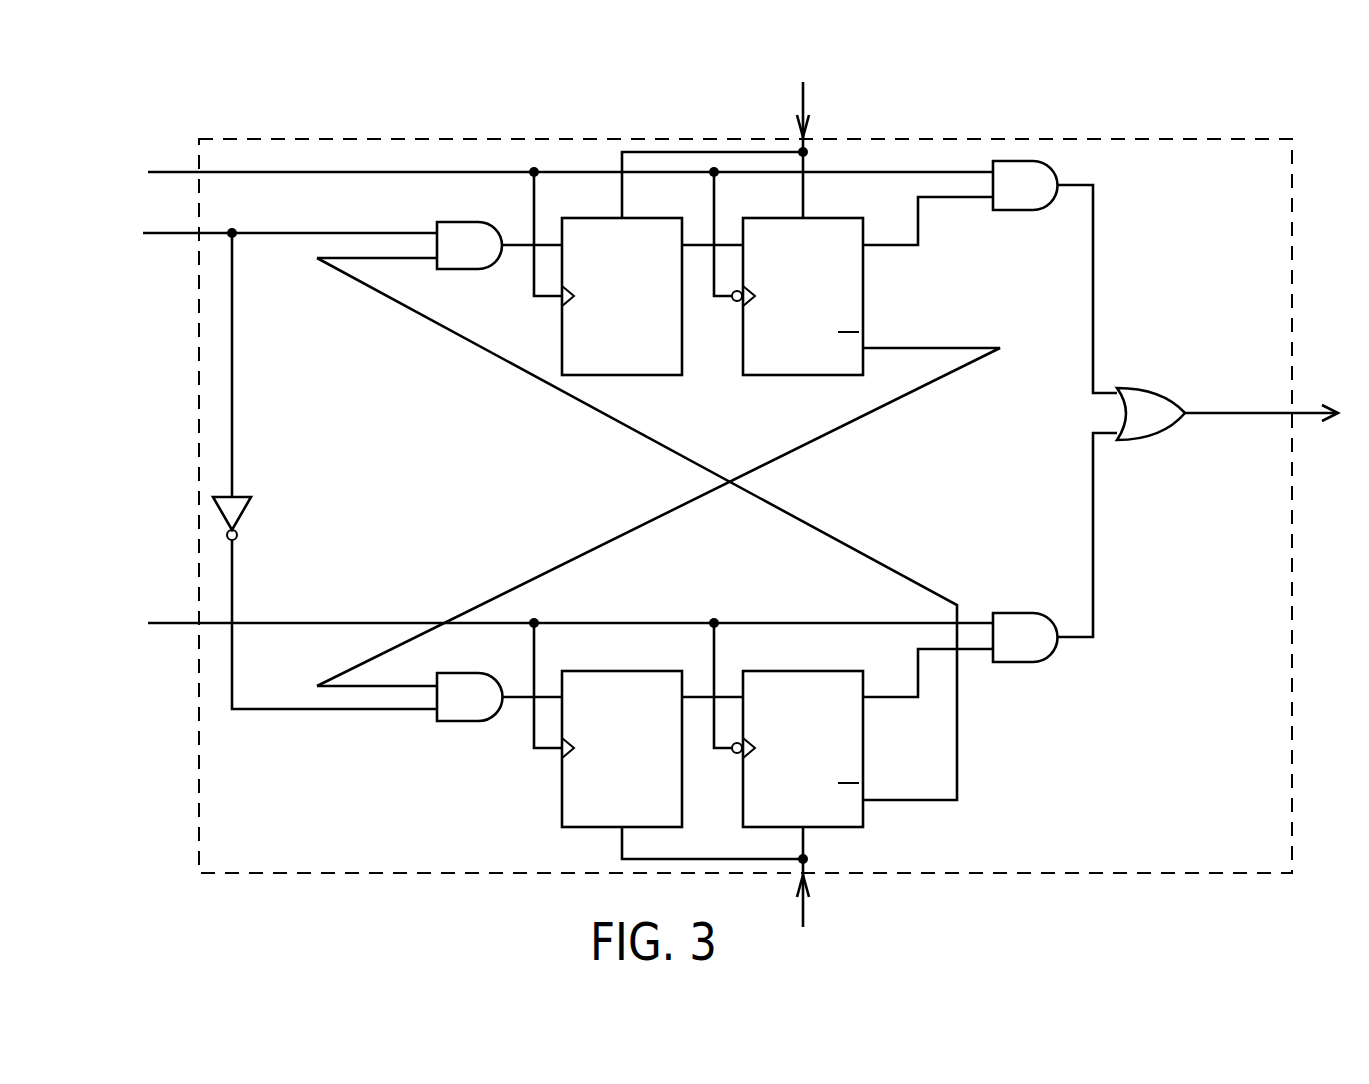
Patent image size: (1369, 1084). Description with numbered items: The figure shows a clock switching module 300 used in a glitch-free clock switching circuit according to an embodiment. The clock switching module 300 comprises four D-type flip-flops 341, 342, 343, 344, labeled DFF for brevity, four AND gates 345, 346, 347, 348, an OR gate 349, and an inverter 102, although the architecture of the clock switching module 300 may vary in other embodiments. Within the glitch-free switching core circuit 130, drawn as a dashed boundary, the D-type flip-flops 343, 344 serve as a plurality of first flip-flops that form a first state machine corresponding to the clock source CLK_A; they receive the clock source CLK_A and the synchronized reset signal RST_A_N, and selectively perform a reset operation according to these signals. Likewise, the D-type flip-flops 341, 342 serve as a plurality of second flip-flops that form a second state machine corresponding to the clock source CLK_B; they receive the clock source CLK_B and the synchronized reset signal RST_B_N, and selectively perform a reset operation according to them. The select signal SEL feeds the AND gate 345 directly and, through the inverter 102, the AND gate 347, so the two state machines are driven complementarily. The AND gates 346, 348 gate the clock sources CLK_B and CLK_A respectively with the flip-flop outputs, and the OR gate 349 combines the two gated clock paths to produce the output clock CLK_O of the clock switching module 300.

The clock switching module 300 is at (160, 108).
The glitch-free switching core circuit 130 is at (1283, 138).
The inverter 102 is at (227, 515).
The D-type flip-flop 341 is at (615, 375).
The D-type flip-flop 342 is at (755, 375).
The D-type flip-flop 343 is at (638, 671).
The D-type flip-flop 344 is at (837, 671).
The AND gate 345 is at (450, 220).
The AND gate 346 is at (1012, 160).
The AND gate 347 is at (450, 672).
The AND gate 348 is at (1012, 663).
The OR gate 349 is at (1135, 385).